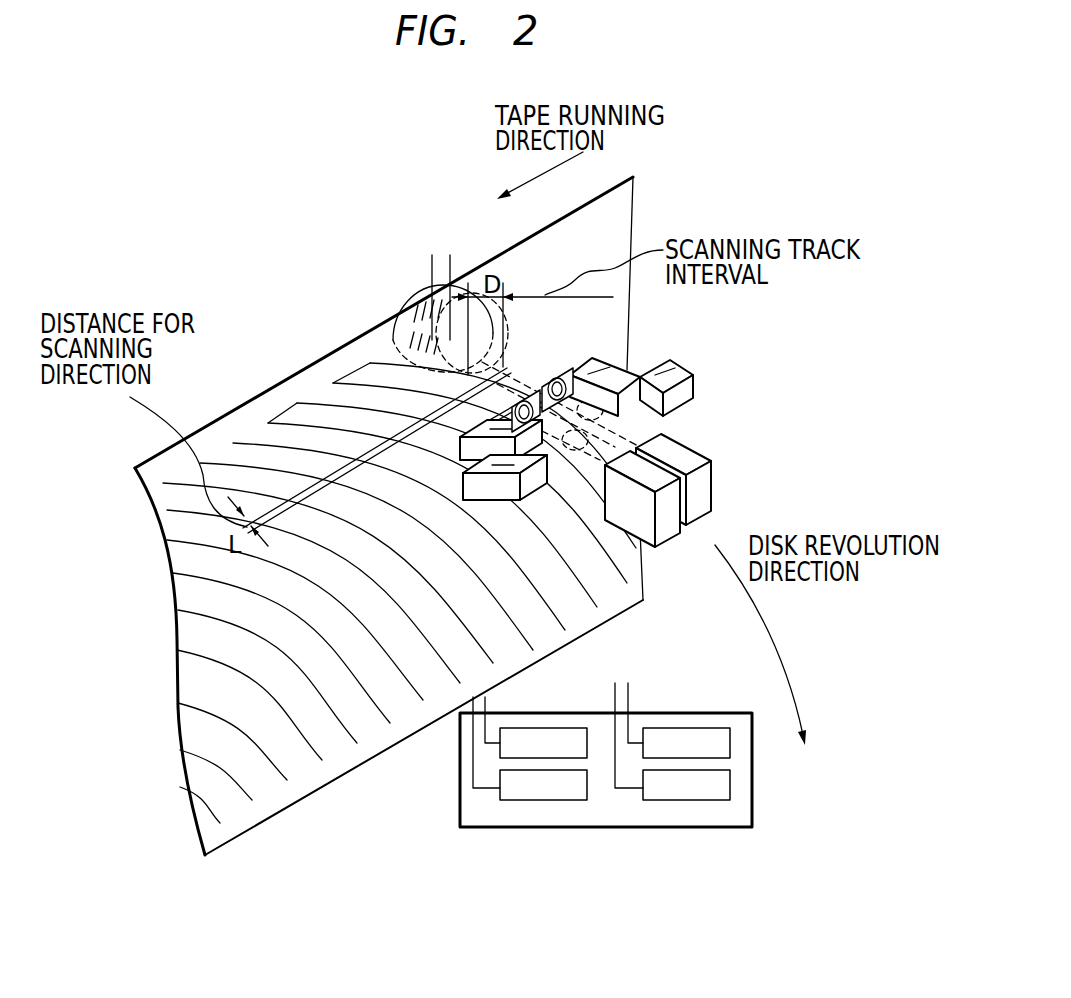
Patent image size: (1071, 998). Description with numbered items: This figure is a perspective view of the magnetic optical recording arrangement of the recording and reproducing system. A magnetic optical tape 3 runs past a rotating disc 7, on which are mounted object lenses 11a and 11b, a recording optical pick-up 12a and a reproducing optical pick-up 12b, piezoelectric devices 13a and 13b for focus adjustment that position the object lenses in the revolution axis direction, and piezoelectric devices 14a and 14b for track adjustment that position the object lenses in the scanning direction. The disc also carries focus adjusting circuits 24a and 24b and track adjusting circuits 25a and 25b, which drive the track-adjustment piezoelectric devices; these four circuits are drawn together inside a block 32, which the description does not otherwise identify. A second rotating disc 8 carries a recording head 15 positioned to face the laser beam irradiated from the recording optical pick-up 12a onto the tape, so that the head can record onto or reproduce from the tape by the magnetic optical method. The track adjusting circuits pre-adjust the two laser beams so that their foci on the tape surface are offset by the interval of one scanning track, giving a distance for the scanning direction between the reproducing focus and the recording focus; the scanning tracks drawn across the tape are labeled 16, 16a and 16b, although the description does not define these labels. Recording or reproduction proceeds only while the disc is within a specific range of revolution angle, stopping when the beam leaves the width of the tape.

The magnetic optical tape 3 is at (628, 206).
The rotating disc 7 is at (780, 490).
The rotating disc 8 is at (353, 244).
The object lens 11a is at (562, 378).
The object lens 11b is at (527, 397).
The recording optical pick-up 12a is at (675, 450).
The reproducing optical pick-up 12b is at (648, 530).
The piezoelectric device for focus adjustment 13a is at (594, 359).
The piezoelectric device for focus adjustment 13b is at (460, 478).
The piezoelectric device for track adjustment 14a is at (675, 364).
The piezoelectric device for track adjustment 14b is at (505, 500).
The recording head 15 is at (408, 292).
The scanning tracks 16 is at (237, 443).
The scanning track 16a is at (370, 363).
The scanning track 16b is at (390, 357).
The focus adjusting circuit 24a is at (686, 743).
The focus adjusting circuit 24b is at (543, 743).
The track adjusting circuit 25a is at (686, 785).
The track adjusting circuit 25b is at (543, 785).
The signal processing circuit 32 is at (616, 797).